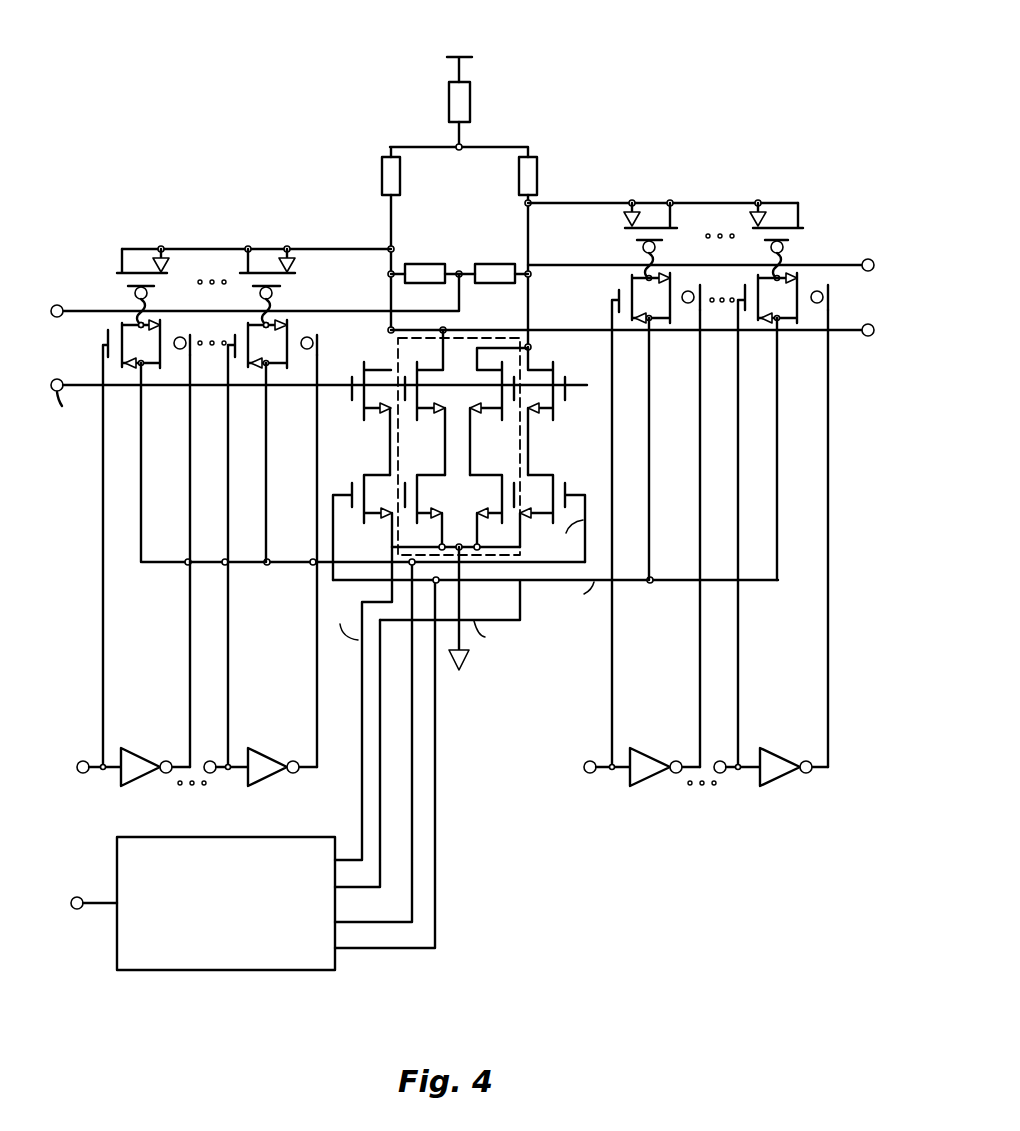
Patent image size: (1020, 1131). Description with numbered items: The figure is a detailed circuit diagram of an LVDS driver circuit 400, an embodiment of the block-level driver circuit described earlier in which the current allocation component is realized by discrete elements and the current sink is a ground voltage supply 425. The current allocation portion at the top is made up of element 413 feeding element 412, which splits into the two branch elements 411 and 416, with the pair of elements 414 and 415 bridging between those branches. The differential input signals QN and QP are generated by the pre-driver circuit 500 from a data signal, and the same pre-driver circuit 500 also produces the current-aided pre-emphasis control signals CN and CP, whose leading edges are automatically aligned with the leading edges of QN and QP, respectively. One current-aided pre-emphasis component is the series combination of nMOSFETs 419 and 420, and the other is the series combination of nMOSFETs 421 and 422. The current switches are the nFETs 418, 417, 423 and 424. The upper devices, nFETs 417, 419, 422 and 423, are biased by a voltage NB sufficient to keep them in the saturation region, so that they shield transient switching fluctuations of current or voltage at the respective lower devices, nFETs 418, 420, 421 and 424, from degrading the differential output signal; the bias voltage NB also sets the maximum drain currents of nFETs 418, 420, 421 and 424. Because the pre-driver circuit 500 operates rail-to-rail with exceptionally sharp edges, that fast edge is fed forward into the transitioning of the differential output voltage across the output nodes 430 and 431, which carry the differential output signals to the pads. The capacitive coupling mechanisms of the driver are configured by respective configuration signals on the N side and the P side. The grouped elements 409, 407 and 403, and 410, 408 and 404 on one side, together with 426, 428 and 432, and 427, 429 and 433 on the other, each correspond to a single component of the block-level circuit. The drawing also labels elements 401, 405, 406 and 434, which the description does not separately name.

The LVDS driver circuit 400 is at (195, 120).
The input terminal A 401 is at (73, 909).
The driver circuit component 403 is at (140, 786).
The driver circuit component 404 is at (268, 786).
The bias terminal NB 405 is at (55, 378).
The common mode voltage terminal VCM 406 is at (55, 318).
The driver circuit component 407 is at (138, 346).
The driver circuit component 408 is at (280, 346).
The driver circuit component 409 is at (114, 280).
The driver circuit component 410 is at (294, 279).
The current allocation component element 411 is at (400, 181).
The current allocation component element 412 is at (471, 103).
The current allocation component element 413 is at (461, 57).
The current allocation component element 414 is at (441, 262).
The current allocation component element 415 is at (488, 263).
The current allocation component element 416 is at (518, 183).
The nFET 417 is at (371, 414).
The nFET 418 is at (376, 470).
The nMOSFET 419 is at (443, 414).
The nMOSFET 420 is at (448, 470).
The nMOSFET 421 is at (486, 452).
The nMOSFET 422 is at (476, 414).
The nFET 423 is at (551, 414).
The nFET 424 is at (560, 452).
The ground voltage supply 425 is at (462, 672).
The driver circuit component 426 is at (625, 236).
The driver circuit component 427 is at (805, 235).
The driver circuit component 428 is at (640, 302).
The driver circuit component 429 is at (797, 302).
The output node 430 is at (870, 272).
The output node 431 is at (866, 337).
The driver circuit component 432 is at (650, 786).
The driver circuit component 433 is at (778, 786).
The switching circuit 434 is at (504, 556).
The pre-driver circuit 500 is at (248, 916).